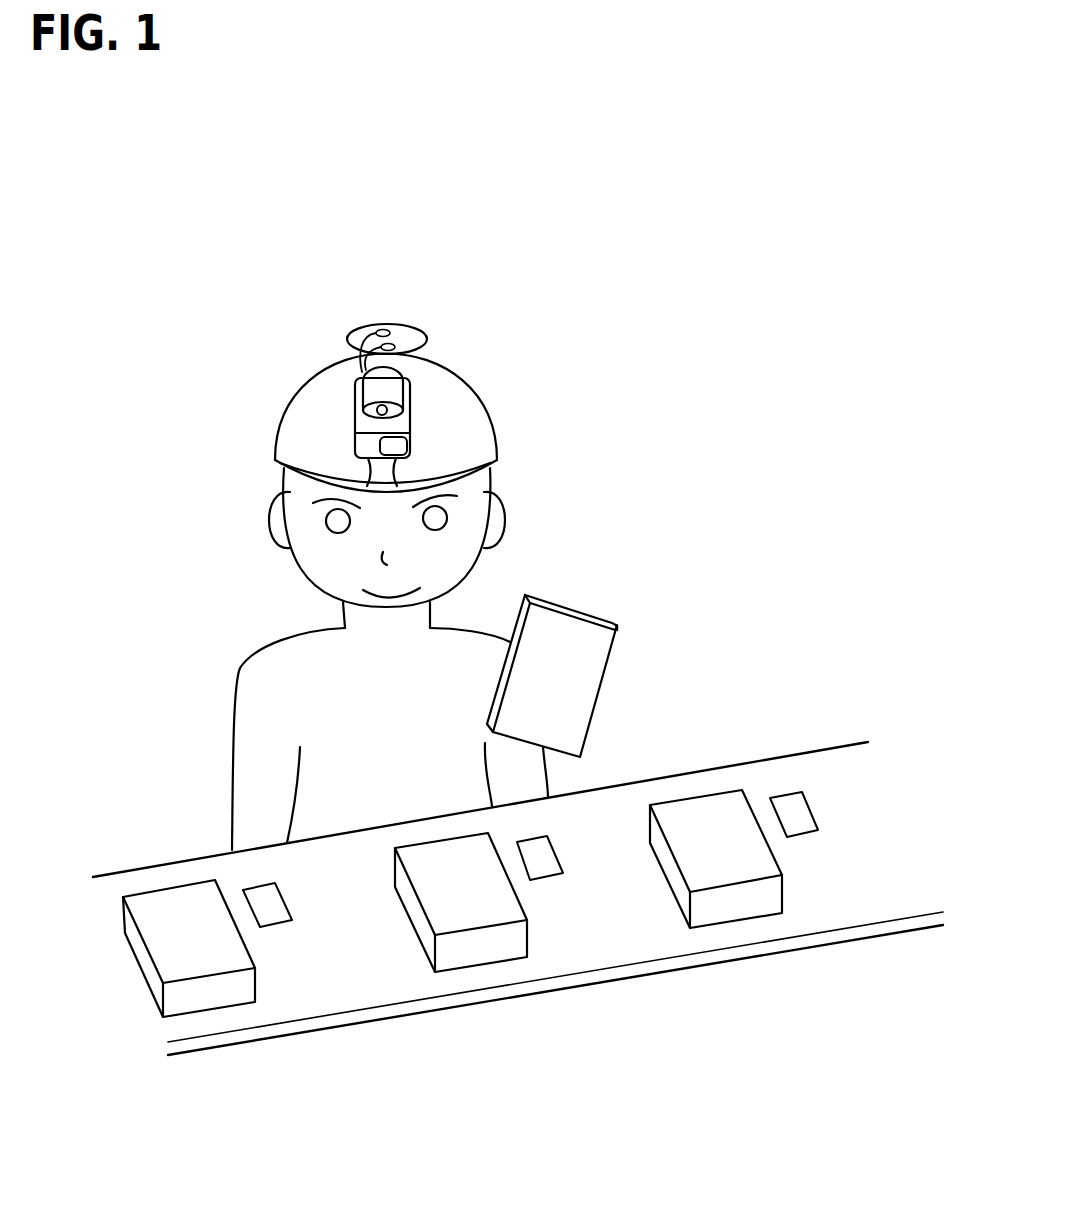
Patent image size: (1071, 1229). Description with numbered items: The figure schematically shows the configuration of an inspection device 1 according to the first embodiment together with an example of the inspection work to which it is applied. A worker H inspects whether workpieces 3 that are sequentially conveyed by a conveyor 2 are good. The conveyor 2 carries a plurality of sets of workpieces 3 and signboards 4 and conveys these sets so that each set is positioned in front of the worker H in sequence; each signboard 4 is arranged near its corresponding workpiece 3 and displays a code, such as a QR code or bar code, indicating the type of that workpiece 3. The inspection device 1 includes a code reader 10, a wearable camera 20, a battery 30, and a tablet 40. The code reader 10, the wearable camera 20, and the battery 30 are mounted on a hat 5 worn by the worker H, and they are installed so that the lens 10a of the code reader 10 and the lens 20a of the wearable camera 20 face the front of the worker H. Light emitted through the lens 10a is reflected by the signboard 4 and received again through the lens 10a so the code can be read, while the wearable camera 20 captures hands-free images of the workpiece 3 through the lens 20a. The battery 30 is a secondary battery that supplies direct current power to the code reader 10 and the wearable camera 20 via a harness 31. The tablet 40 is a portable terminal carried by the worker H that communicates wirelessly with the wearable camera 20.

The inspection device 1 is at (112, 548).
The worker H is at (257, 537).
The hat 5 is at (467, 458).
The code reader 10 is at (417, 432).
The lens 10a is at (400, 448).
The wearable camera 20 is at (387, 385).
The lens 20a is at (378, 410).
The battery 30 is at (408, 332).
The harness 31 is at (365, 367).
The tablet 40 is at (598, 663).
The conveyor 2 is at (612, 937).
The workpiece 3 is at (207, 1002).
The signboard 4 is at (282, 915).